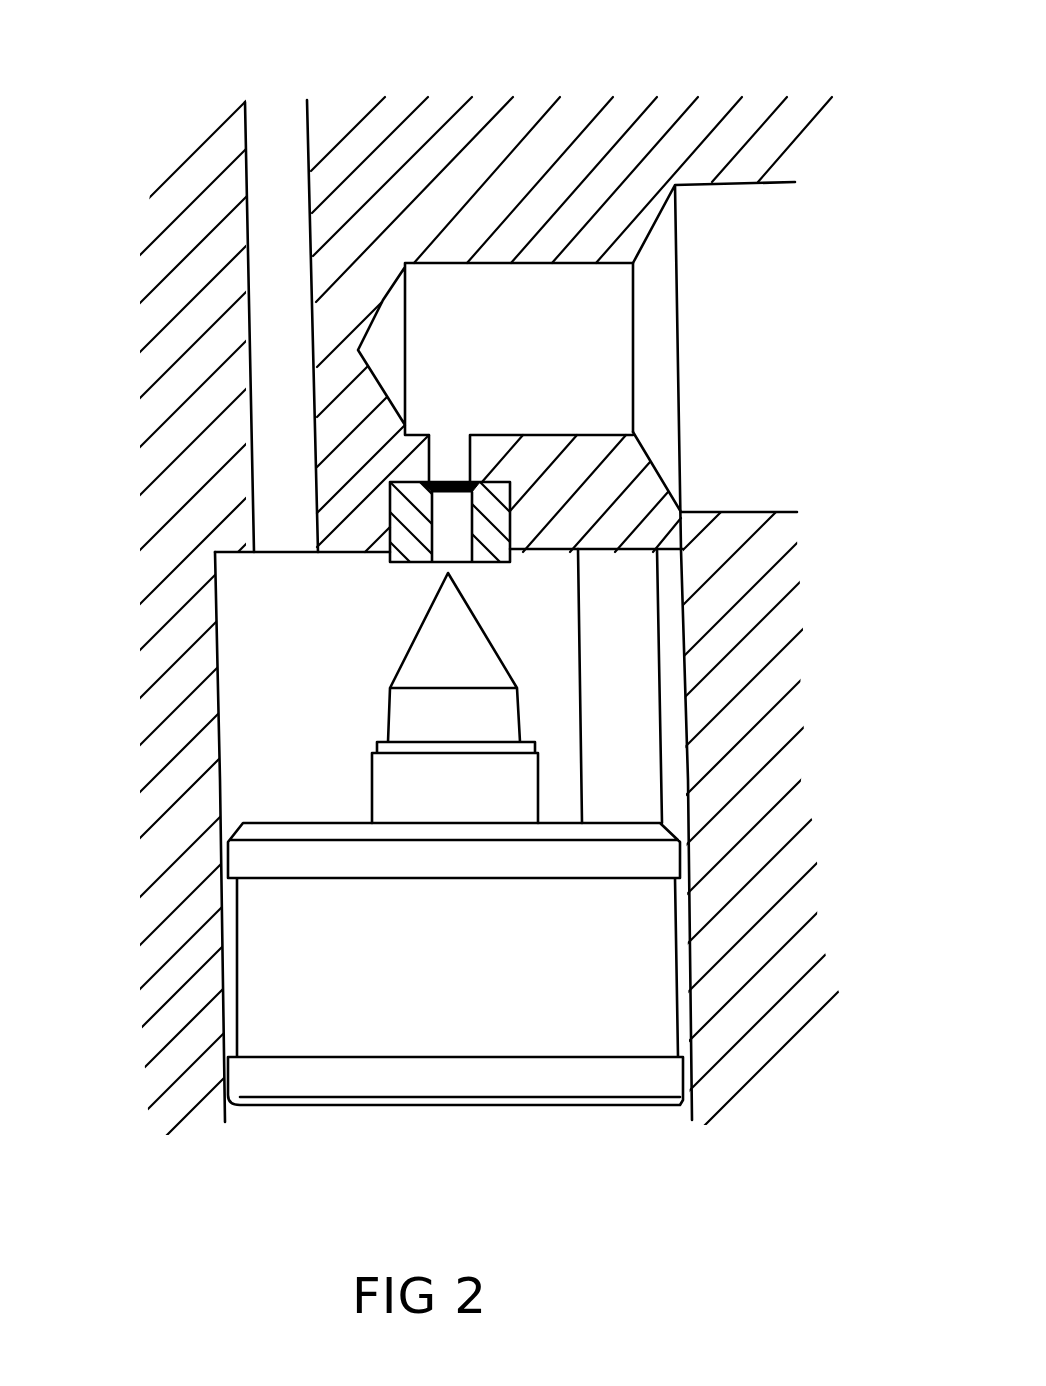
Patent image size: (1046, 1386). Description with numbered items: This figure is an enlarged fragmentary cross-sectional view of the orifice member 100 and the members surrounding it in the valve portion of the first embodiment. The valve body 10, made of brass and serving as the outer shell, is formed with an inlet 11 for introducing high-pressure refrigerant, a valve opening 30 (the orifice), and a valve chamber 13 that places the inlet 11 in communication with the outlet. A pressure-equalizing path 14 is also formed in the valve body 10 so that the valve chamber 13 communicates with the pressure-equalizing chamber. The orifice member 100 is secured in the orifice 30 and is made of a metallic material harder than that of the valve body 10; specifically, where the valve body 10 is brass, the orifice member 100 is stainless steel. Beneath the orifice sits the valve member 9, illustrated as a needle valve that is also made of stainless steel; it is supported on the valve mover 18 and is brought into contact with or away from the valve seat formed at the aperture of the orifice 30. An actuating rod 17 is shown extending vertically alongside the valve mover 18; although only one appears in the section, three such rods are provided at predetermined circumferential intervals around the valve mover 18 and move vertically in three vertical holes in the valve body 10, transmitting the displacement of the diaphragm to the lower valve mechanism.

The valve member 9 is at (492, 670).
The valve body 10 is at (490, 143).
The inlet 11 is at (728, 212).
The valve chamber 13 is at (668, 797).
The pressure-equalizing path 14 is at (265, 270).
The actuating rod 17 is at (640, 686).
The valve mover 18 is at (658, 957).
The valve opening 30 is at (448, 455).
The orifice member 100 is at (498, 547).